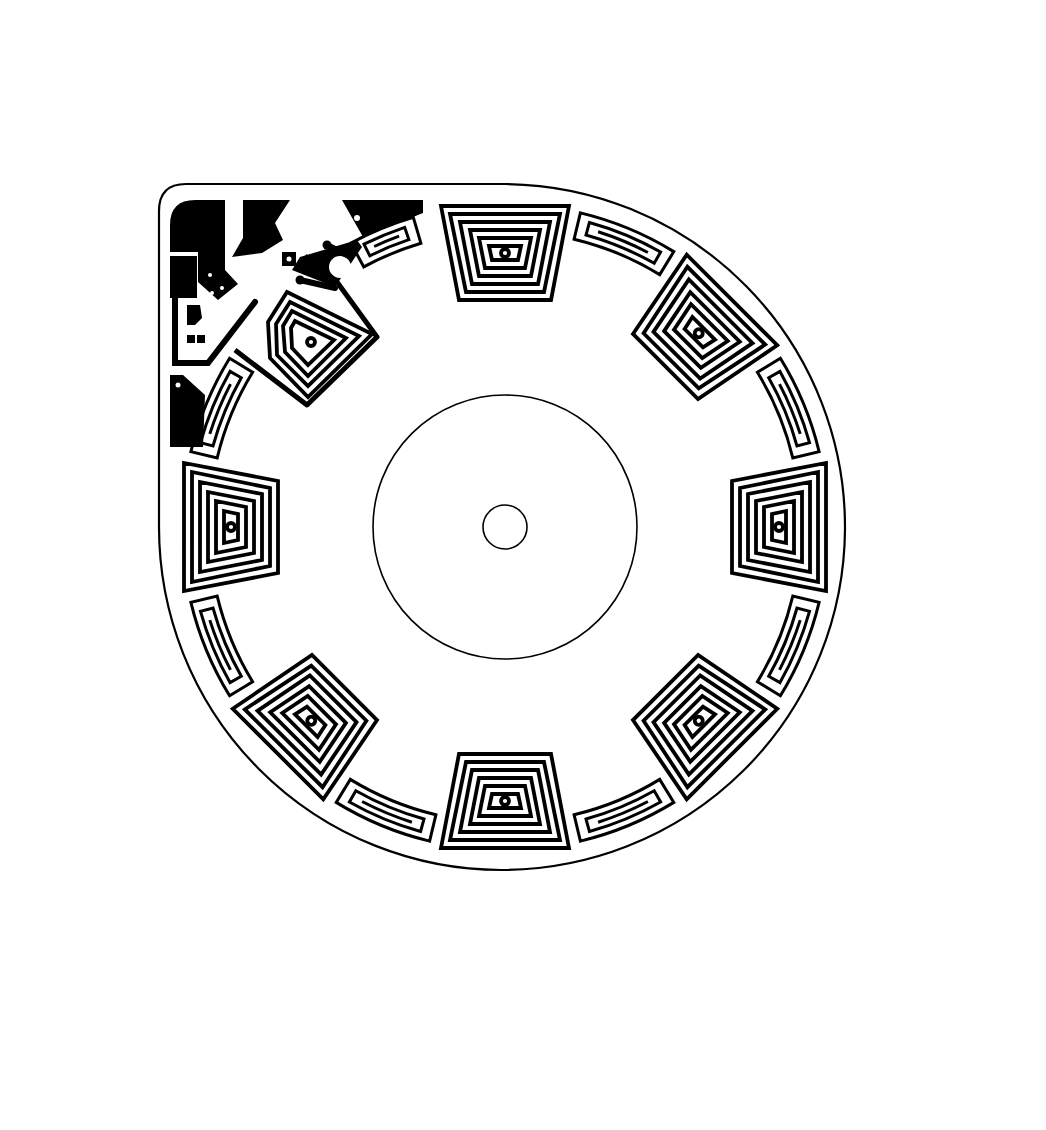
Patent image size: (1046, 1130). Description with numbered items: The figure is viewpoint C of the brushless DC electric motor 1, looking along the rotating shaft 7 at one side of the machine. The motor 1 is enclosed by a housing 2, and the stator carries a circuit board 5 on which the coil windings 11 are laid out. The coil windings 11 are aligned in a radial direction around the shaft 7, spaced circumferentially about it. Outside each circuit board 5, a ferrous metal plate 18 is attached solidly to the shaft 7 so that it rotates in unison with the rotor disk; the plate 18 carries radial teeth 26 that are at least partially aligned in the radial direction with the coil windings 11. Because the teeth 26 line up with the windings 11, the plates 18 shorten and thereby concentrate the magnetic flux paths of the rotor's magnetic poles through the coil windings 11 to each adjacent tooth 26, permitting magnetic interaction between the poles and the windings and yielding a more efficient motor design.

The brushless DC electric motor 1 is at (199, 129).
The housing 2 is at (275, 787).
The circuit board 5 is at (790, 688).
The rotating shaft 7 is at (517, 525).
The coil windings 11 is at (648, 237).
The ferrous metal plates 18 is at (620, 395).
The radial teeth 26 is at (722, 618).